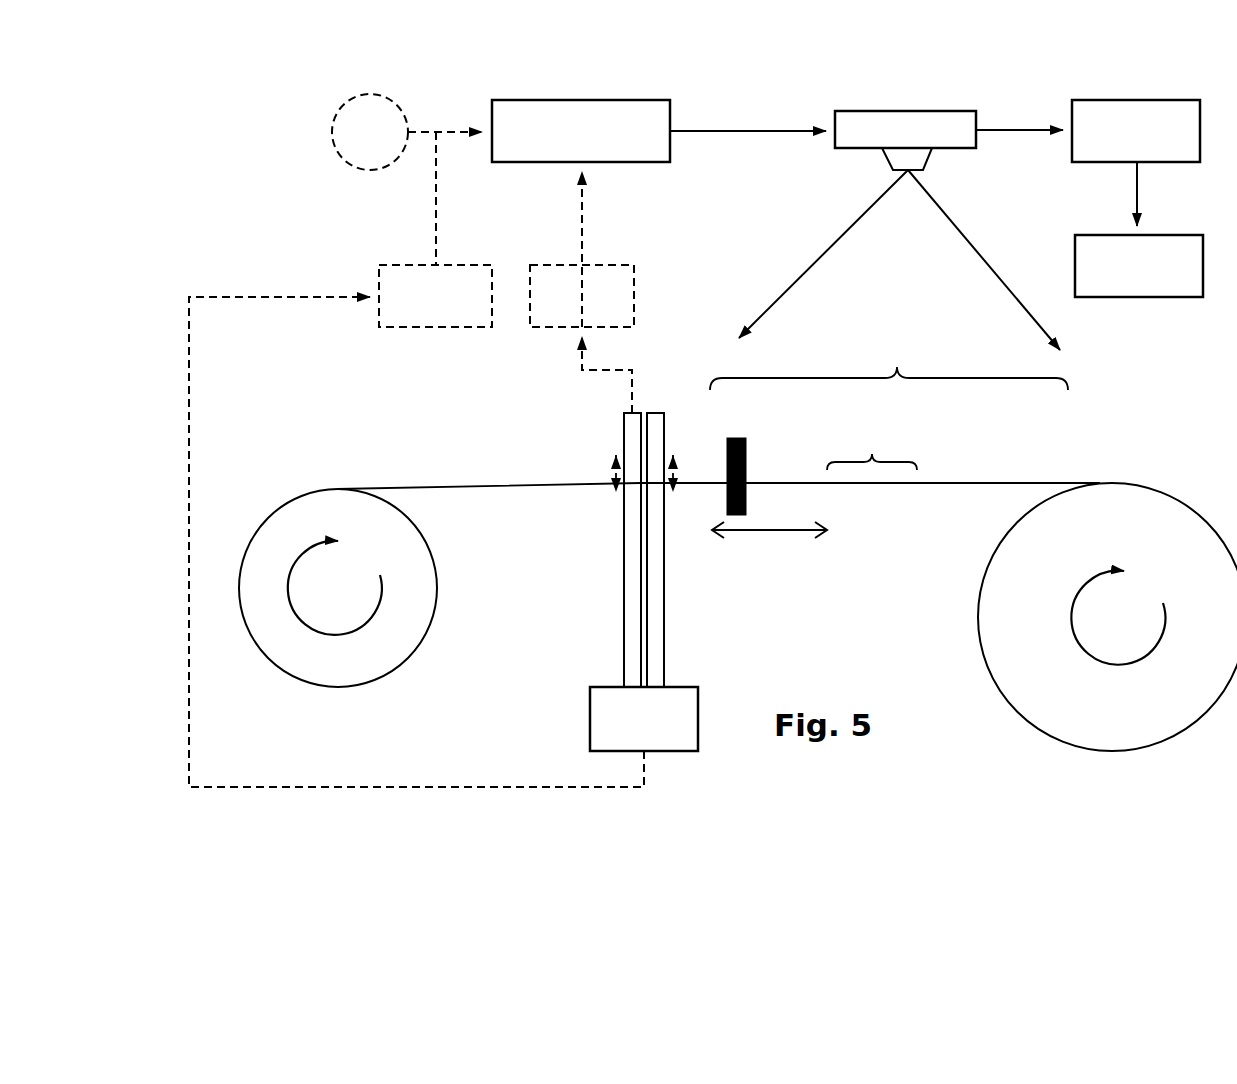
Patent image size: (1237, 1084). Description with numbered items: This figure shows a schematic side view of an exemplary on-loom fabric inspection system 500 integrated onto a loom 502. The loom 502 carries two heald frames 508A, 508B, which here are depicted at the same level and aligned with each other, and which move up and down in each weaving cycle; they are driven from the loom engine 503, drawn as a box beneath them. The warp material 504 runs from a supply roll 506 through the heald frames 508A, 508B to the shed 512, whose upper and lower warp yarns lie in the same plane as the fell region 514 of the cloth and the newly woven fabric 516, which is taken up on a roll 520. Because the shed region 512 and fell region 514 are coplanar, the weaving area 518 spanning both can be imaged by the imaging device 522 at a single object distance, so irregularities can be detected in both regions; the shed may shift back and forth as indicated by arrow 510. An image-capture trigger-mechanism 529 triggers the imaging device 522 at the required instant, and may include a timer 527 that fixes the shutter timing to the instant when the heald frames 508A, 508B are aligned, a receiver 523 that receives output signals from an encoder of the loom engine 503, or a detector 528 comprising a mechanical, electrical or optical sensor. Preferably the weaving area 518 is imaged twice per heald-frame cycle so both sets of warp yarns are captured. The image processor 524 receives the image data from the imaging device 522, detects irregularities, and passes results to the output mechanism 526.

The fabric inspection system 500 is at (225, 195).
The loom 502 is at (490, 707).
The loom engine 503 is at (644, 719).
The web of print media 504 is at (507, 444).
The supply roll 506 is at (285, 660).
The heald frame 508A is at (623, 596).
The heald frame 508B is at (663, 597).
The sensor movement direction 510 is at (727, 507).
The shed 512 is at (708, 448).
The fell region 514 is at (872, 445).
The newly woven fabric 516 is at (1005, 482).
The weaving area 518 is at (889, 361).
The take-up roll 520 is at (982, 608).
The imaging device 522 is at (850, 108).
The receiver 523 is at (416, 459).
The image processor 524 is at (1136, 163).
The output mechanism 526 is at (1139, 266).
The timer 527 is at (407, 132).
The detector 528 is at (582, 292).
The image-capture trigger-mechanism 529 is at (659, 131).